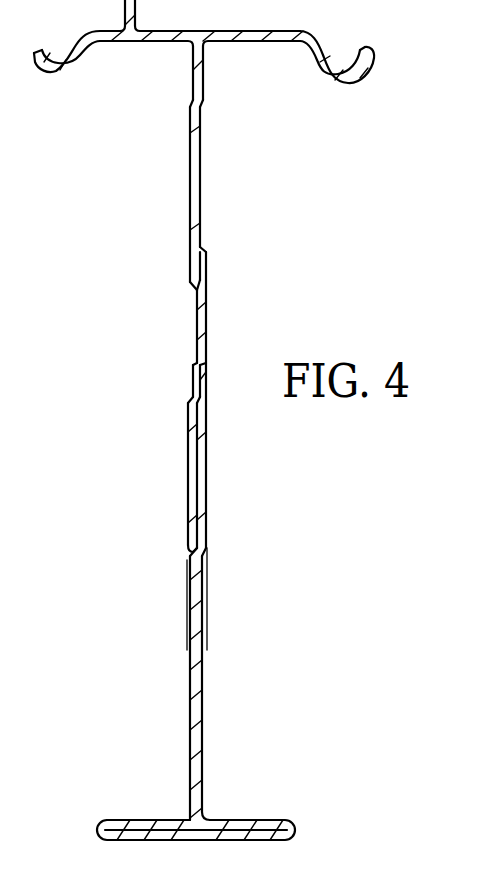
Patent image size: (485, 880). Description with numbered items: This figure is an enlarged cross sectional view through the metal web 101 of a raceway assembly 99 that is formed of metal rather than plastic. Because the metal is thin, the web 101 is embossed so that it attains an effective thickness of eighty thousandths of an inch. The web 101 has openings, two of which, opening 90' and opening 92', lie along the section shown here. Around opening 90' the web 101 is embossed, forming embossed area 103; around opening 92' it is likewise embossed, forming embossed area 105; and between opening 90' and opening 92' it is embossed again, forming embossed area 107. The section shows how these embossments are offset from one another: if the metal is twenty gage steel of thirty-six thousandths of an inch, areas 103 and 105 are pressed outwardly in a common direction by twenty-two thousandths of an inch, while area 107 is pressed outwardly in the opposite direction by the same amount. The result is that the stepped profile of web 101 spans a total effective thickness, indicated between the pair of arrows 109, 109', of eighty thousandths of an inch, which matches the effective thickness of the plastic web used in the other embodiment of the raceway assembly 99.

The opening 90' is at (204, 274).
The opening 92' is at (155, 455).
The raceway assembly 99 is at (288, 718).
The web 101 is at (190, 782).
The embossed area 103 is at (192, 100).
The embossed area 105 is at (194, 402).
The embossed area 107 is at (204, 282).
The arrow 109 is at (136, 624).
The arrow 109' is at (249, 599).